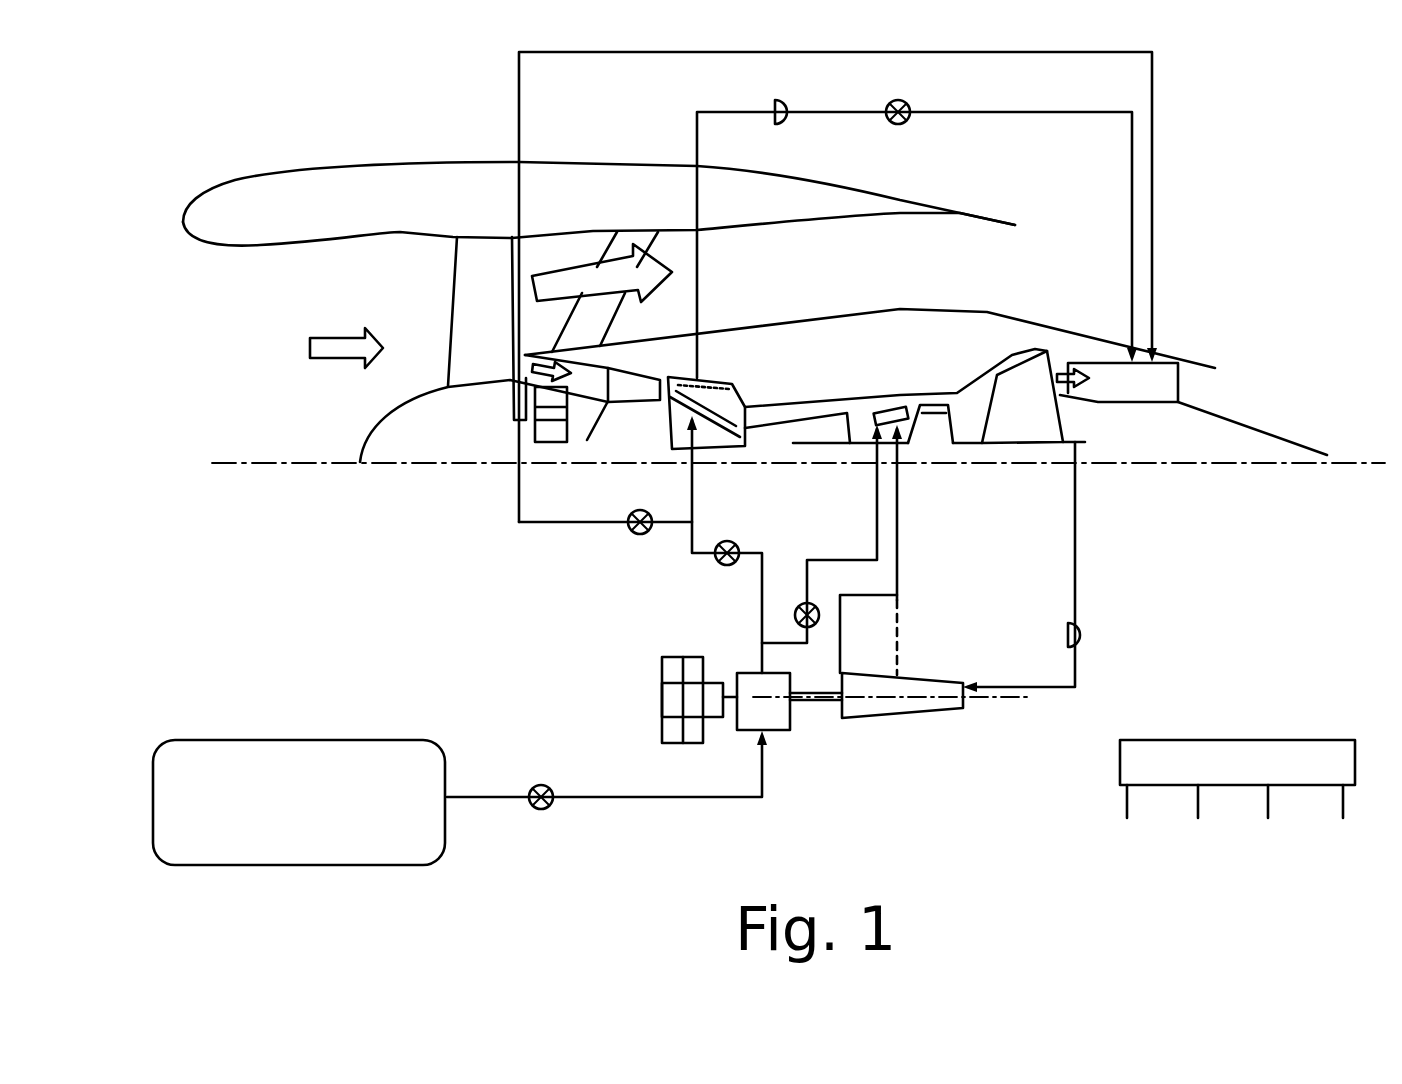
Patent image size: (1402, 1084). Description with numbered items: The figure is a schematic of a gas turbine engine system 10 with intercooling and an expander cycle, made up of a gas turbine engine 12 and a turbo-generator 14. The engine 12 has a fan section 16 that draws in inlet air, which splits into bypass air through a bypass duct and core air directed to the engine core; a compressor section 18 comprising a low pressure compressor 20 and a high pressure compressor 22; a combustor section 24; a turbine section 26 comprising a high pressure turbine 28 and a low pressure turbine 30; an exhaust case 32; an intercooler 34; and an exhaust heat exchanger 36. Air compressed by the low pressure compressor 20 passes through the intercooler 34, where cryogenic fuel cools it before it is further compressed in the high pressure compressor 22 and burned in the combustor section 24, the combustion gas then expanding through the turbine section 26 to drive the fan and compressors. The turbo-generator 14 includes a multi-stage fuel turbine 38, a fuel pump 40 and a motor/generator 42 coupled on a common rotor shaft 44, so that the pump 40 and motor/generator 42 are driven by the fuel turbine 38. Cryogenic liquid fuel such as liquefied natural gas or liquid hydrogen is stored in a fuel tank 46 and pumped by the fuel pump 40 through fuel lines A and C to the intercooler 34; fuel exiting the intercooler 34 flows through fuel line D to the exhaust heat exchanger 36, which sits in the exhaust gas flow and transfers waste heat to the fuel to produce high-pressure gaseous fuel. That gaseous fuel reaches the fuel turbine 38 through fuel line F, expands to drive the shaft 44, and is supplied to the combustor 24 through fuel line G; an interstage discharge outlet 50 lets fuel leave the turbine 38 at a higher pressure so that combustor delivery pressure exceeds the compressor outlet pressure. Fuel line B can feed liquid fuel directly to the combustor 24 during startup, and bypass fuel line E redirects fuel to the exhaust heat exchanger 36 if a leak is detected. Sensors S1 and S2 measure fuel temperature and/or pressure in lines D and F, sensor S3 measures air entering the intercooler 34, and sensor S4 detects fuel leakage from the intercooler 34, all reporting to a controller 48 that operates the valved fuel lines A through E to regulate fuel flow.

The gas turbine engine system 10 is at (1257, 131).
The gas turbine engine 12 is at (391, 221).
The turbo-generator 14 is at (974, 750).
The fan section 16 is at (512, 218).
The compressor section 18 is at (842, 362).
The low pressure compressor 20 is at (645, 397).
The high pressure compressor 22 is at (767, 423).
The combustor section 24 is at (891, 409).
The turbine section 26 is at (1050, 342).
The high pressure turbine 28 is at (933, 412).
The low pressure turbine 30 is at (1039, 389).
The exhaust case 32 is at (1123, 405).
The intercooler 34 is at (728, 409).
The exhaust heat exchanger 36 is at (1138, 394).
The fuel turbine 38 is at (887, 719).
The fuel pump 40 is at (778, 722).
The motor/generator 42 is at (703, 710).
The rotor shaft 44 is at (812, 701).
The fuel tank 46 is at (311, 839).
The controller 48 is at (1333, 776).
The interstage discharge outlet 50 is at (898, 677).
The sensor S1 is at (783, 124).
The sensor S2 is at (1083, 635).
The sensor S3 is at (733, 366).
The sensor S4 is at (710, 430).
The fuel line A is at (548, 808).
The fuel line B is at (814, 618).
The fuel line C is at (725, 541).
The fuel line D is at (905, 122).
The fuel line E is at (643, 534).
The fuel line F is at (1075, 585).
The fuel line G is at (897, 573).